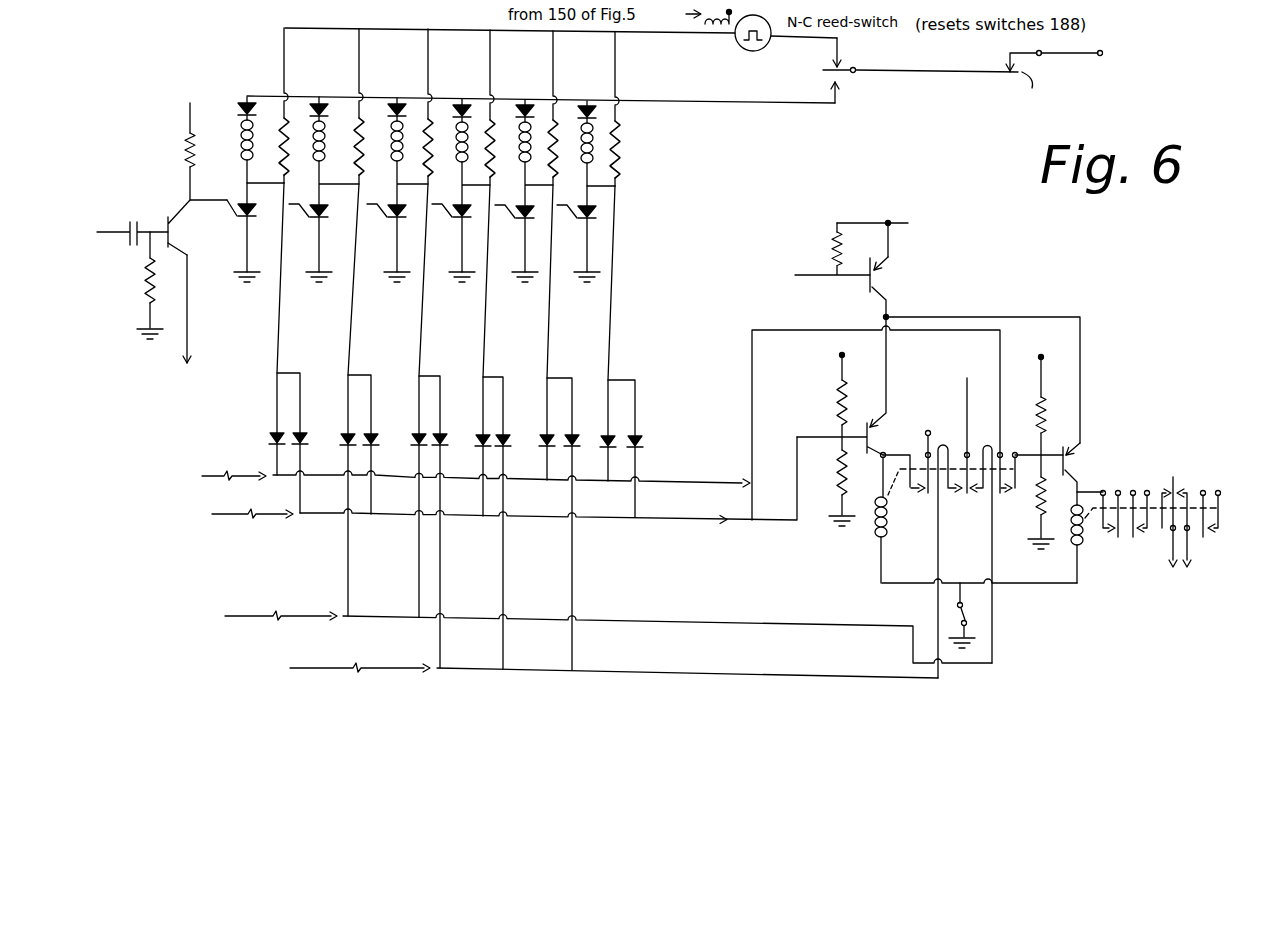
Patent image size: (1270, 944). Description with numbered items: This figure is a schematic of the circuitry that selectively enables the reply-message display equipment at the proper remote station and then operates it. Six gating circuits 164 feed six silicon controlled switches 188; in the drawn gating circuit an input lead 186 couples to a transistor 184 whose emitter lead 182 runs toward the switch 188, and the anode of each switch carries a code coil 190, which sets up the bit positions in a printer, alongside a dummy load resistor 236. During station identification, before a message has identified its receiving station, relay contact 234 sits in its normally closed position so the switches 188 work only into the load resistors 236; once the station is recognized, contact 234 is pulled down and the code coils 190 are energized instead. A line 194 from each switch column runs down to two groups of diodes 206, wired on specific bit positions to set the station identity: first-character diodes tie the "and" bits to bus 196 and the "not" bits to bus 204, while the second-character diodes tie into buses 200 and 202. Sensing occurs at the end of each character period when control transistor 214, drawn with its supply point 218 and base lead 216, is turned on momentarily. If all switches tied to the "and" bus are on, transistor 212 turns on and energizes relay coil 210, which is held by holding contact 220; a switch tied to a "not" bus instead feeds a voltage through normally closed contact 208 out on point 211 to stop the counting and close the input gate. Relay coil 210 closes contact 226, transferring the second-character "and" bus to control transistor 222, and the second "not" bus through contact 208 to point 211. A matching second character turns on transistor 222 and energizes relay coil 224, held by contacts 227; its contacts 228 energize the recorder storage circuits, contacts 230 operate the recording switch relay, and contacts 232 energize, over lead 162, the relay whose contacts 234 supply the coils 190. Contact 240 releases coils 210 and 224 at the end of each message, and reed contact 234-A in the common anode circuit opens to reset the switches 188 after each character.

The gating circuit 164 is at (175, 201).
The input line with coupling capacitor 186 is at (112, 228).
The transistor 184 is at (172, 228).
The emitter lead 182 is at (178, 248).
The code coil 190 is at (240, 141).
The silicon controlled switch 188 is at (233, 197).
The load resistor 236 is at (292, 118).
The output line 194 is at (281, 335).
The diode 206 is at (275, 431).
The bus 196 is at (680, 480).
The bus 200 is at (672, 520).
The bus 204 is at (676, 622).
The bus 202 is at (676, 674).
The positive supply terminal 218 is at (899, 222).
The base lead 216 is at (813, 275).
The control transistor 214 is at (887, 281).
The control transistor 212 is at (875, 433).
The point 211 is at (967, 388).
The holding contact 220 is at (905, 484).
The relay coil 210 is at (890, 522).
The normally closed contact 208 is at (967, 497).
The contact 226 is at (1010, 497).
The control transistor 222 is at (1070, 461).
The relay coil 224 is at (1066, 538).
The contact 240 is at (1062, 622).
The contacts 227 is at (1110, 492).
The contacts 230 is at (1217, 492).
The contacts 228 is at (1140, 535).
The contacts 232 is at (1189, 551).
The line to relay 192 162 is at (1163, 540).
The relay contact 234 is at (847, 67).
The reed contact 234-A is at (744, 50).